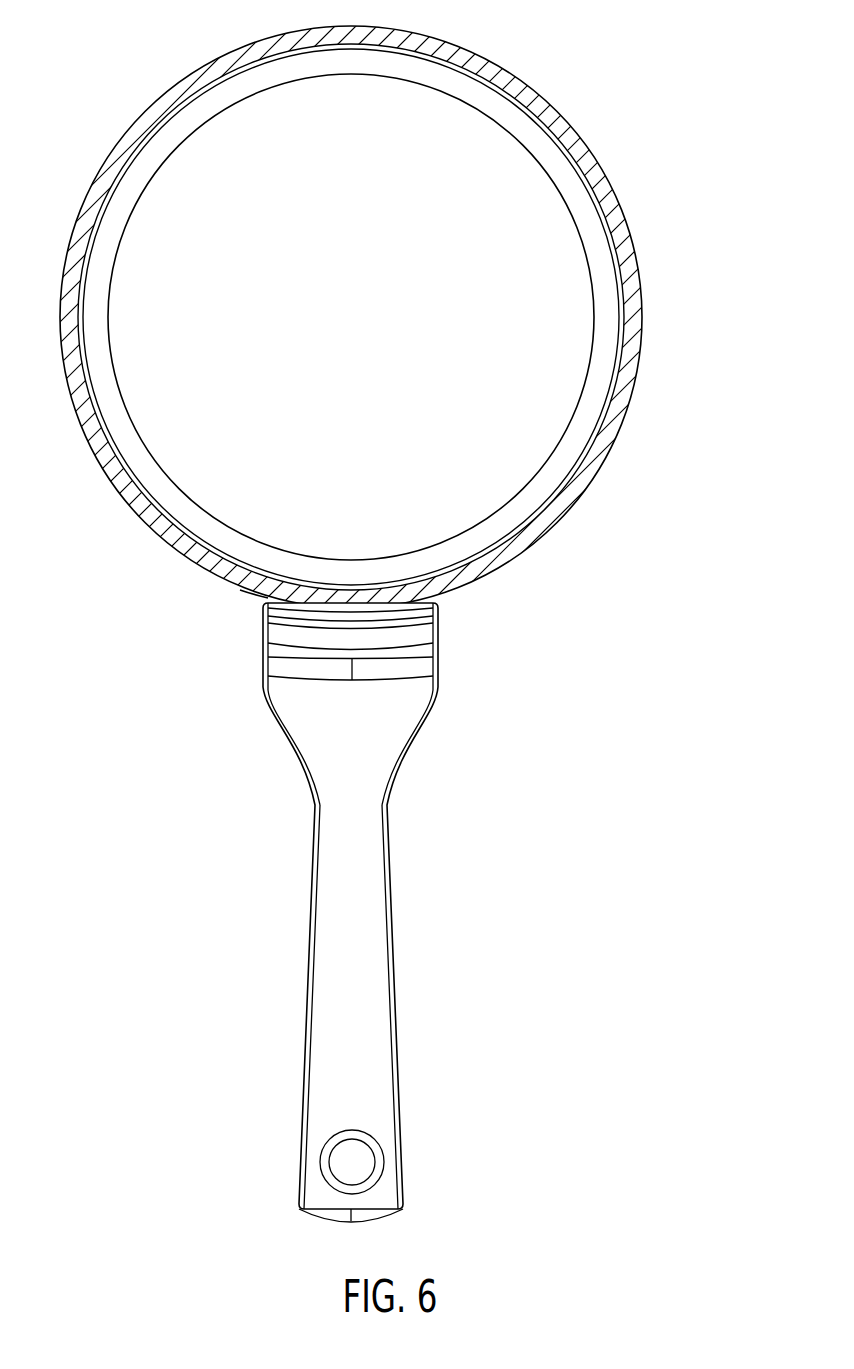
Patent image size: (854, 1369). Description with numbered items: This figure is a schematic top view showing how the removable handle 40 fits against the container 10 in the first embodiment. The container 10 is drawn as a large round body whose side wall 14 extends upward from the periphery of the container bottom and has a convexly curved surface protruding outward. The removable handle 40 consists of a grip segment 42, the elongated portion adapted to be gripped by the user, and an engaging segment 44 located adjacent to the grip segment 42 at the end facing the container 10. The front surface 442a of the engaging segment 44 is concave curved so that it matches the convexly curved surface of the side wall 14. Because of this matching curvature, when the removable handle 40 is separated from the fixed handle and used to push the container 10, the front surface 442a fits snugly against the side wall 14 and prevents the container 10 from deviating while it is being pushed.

The container 10 is at (427, 587).
The side wall 14 is at (602, 173).
The removable handle 40 is at (315, 906).
The grip segment 42 is at (335, 968).
The engaging segment 44 is at (312, 697).
The front surface 442a is at (255, 593).